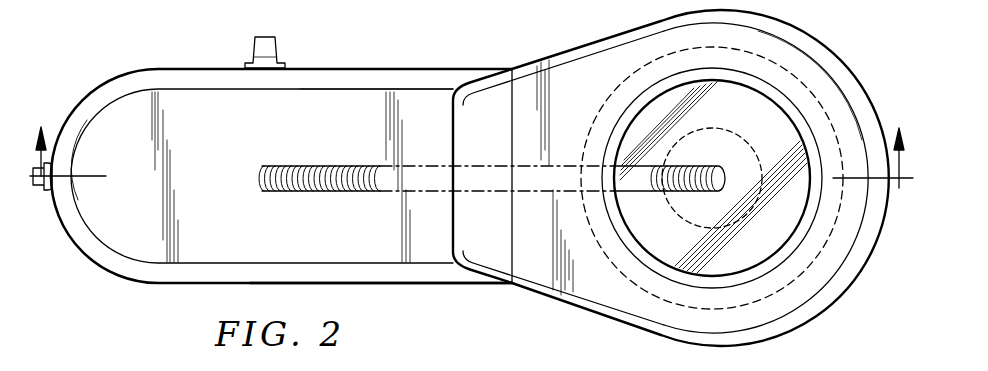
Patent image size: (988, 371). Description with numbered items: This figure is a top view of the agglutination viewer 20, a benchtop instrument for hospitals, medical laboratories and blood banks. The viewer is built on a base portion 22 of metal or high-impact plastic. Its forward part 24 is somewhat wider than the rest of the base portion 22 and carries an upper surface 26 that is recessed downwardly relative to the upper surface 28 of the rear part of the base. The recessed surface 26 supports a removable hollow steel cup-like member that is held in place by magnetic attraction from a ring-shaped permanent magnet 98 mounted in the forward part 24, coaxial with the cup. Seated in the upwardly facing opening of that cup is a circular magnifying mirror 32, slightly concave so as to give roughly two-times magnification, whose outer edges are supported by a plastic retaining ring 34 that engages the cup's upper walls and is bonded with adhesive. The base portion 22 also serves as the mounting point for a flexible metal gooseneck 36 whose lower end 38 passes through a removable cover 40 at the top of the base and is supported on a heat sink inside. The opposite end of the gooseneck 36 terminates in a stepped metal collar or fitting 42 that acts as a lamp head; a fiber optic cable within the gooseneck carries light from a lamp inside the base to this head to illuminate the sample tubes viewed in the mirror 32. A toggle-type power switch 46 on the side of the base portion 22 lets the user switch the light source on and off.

The agglutination viewer 20 is at (85, 78).
The base portion 22 is at (160, 285).
The forward part 24 is at (805, 316).
The upper surface 26 is at (842, 246).
The upper surface 28 is at (228, 160).
The magnifying mirror 32 is at (747, 121).
The plastic retaining ring 34 is at (782, 97).
The flexible metal gooseneck 36 is at (362, 192).
The lower end 38 is at (271, 195).
The removable cover 40 is at (375, 285).
The stepped metal collar or fitting 42 is at (713, 187).
The toggle-type power switch 46 is at (275, 53).
The ring-shaped permanent magnet 98 is at (753, 305).